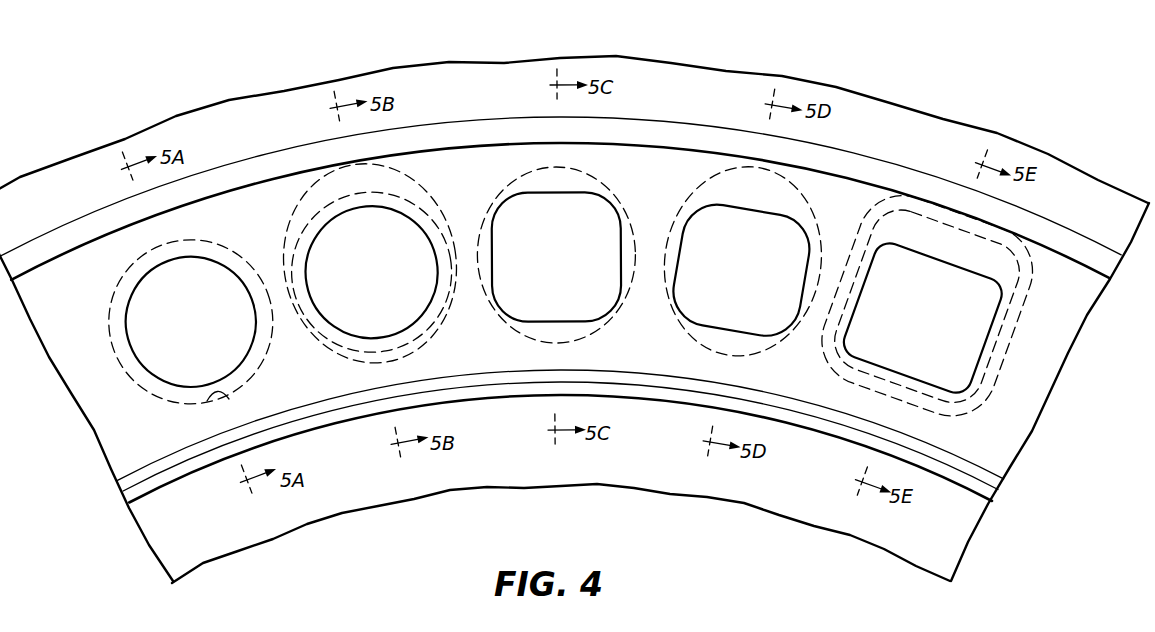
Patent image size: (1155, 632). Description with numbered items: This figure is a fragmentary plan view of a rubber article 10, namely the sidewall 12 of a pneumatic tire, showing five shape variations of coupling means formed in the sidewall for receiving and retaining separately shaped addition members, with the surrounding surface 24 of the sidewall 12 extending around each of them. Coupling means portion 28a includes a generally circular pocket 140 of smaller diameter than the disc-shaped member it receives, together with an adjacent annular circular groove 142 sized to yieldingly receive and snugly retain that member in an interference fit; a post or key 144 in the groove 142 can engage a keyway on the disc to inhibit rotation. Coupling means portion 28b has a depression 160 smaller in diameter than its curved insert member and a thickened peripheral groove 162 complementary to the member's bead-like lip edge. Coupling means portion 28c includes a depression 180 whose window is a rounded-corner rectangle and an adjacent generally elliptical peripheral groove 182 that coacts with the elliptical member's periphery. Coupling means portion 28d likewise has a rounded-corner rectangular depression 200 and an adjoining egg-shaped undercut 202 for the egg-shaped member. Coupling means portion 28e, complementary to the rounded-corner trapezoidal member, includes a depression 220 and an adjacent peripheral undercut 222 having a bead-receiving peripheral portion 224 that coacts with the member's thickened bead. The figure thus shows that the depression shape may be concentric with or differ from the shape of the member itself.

The rubber article 10 is at (240, 100).
The sidewall 12 is at (896, 97).
The surrounding surface 24 is at (130, 453).
The coupling means portion 28a is at (162, 318).
The coupling means portion 28b is at (357, 233).
The coupling means portion 28c is at (565, 263).
The coupling means portion 28d is at (754, 278).
The coupling means portion 28e is at (955, 309).
The pocket 140 is at (148, 272).
The circular groove 142 is at (106, 306).
The key 144 is at (229, 399).
The depression 160 is at (325, 222).
The thickened peripheral groove 162 is at (333, 200).
The depression 180 is at (515, 320).
The peripheral groove 182 is at (578, 342).
The depression 200 is at (705, 332).
The undercut 202 is at (787, 342).
The depression 220 is at (992, 320).
The peripheral undercut 222 is at (920, 222).
The bead-receiving peripheral portion 224 is at (924, 416).